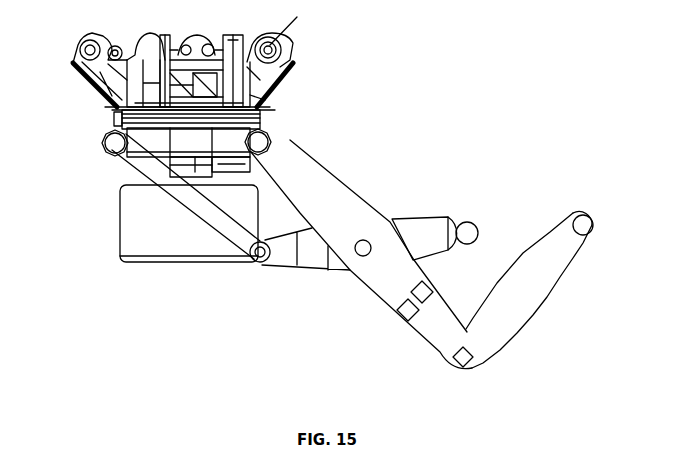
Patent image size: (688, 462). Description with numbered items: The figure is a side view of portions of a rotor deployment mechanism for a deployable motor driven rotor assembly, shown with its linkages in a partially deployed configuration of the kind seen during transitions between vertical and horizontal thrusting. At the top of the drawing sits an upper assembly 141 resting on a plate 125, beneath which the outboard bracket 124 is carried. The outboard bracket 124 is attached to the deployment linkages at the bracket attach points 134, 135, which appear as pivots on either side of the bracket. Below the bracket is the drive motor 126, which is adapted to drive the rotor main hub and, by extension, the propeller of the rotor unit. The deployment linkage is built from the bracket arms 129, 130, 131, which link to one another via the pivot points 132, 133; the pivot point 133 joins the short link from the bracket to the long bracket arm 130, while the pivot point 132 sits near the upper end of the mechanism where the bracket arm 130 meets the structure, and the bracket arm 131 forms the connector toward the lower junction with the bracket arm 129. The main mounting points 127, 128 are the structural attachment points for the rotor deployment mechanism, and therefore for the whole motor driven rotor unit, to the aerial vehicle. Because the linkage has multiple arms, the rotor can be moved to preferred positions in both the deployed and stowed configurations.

The gripper bracket 141 is at (313, 68).
The mounting plate 125 is at (262, 114).
The outboard bracket 124 is at (118, 120).
The bracket attach point 135 is at (283, 137).
The bracket attach point 134 is at (108, 149).
The drive motor 126 is at (117, 246).
The pivot point 133 is at (258, 265).
The bracket arm 130 is at (323, 272).
The bracket arm 131 is at (418, 322).
The pivot point 132 is at (393, 217).
The main mounting point 127 is at (470, 220).
The main mounting point 128 is at (582, 213).
The bracket arm 129 is at (550, 294).